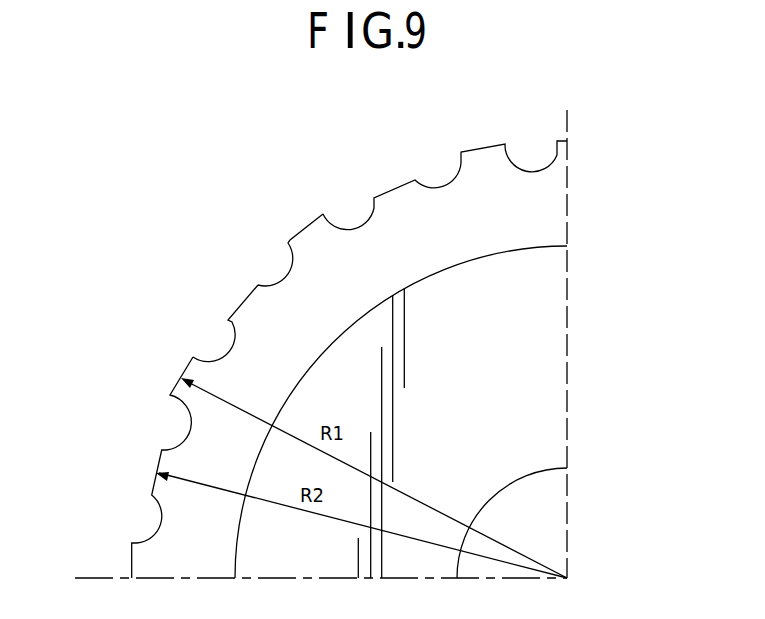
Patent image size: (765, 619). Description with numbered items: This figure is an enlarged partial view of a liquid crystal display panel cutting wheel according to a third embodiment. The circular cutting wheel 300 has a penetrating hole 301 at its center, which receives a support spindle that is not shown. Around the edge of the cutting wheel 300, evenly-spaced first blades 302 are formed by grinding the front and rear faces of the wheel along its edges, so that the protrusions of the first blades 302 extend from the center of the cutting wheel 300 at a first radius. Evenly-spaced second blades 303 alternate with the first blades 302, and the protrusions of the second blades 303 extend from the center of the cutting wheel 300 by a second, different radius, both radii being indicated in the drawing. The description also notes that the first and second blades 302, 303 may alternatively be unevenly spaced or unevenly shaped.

The cutting wheel 300 is at (381, 181).
The penetrating hole 301 is at (530, 532).
The first blades 302 is at (302, 223).
The second blades 303 is at (243, 299).